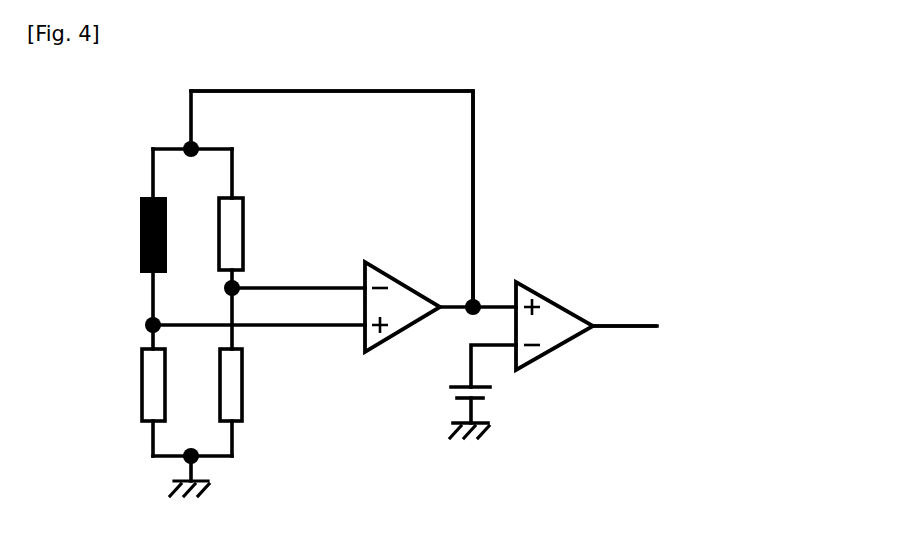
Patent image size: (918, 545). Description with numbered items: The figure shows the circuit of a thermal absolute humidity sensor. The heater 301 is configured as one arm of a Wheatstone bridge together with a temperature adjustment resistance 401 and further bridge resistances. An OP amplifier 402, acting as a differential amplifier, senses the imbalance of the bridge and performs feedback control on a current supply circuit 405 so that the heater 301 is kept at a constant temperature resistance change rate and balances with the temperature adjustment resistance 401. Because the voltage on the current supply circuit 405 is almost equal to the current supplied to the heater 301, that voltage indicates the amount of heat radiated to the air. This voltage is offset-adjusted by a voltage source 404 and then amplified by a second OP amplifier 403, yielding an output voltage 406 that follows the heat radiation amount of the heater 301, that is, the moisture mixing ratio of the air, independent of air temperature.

The heater 301 is at (142, 232).
The temperature adjustment resistance 401 is at (240, 394).
The OP amplifier 402 is at (370, 340).
The OP amplifier 403 is at (548, 330).
The voltage source 404 is at (488, 391).
The current supply circuit 405 is at (473, 152).
The output voltage 406 is at (685, 308).